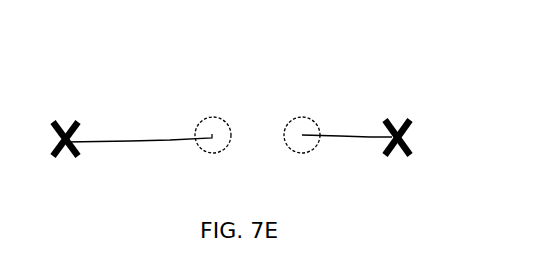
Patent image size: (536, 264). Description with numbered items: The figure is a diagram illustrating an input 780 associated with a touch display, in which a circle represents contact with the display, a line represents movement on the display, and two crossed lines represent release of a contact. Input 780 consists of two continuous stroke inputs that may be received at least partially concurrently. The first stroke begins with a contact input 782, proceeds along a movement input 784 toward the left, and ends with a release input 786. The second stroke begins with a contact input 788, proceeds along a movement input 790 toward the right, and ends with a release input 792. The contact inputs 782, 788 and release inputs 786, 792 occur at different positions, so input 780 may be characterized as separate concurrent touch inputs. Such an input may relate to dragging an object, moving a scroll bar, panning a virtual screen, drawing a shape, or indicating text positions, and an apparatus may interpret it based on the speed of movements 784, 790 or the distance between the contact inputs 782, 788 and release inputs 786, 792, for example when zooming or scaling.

The input 780 is at (262, 117).
The contact input 782 is at (212, 148).
The movement input 784 is at (139, 126).
The release input 786 is at (82, 156).
The contact input 788 is at (300, 148).
The movement input 790 is at (347, 123).
The release input 792 is at (428, 139).